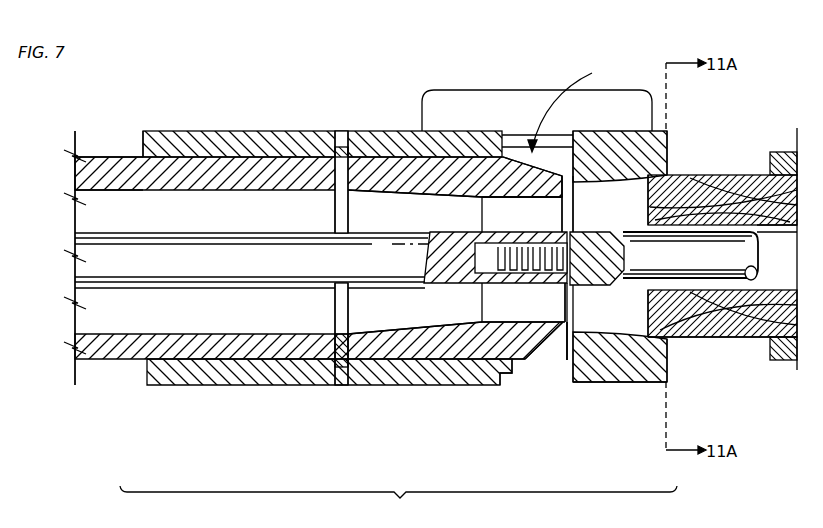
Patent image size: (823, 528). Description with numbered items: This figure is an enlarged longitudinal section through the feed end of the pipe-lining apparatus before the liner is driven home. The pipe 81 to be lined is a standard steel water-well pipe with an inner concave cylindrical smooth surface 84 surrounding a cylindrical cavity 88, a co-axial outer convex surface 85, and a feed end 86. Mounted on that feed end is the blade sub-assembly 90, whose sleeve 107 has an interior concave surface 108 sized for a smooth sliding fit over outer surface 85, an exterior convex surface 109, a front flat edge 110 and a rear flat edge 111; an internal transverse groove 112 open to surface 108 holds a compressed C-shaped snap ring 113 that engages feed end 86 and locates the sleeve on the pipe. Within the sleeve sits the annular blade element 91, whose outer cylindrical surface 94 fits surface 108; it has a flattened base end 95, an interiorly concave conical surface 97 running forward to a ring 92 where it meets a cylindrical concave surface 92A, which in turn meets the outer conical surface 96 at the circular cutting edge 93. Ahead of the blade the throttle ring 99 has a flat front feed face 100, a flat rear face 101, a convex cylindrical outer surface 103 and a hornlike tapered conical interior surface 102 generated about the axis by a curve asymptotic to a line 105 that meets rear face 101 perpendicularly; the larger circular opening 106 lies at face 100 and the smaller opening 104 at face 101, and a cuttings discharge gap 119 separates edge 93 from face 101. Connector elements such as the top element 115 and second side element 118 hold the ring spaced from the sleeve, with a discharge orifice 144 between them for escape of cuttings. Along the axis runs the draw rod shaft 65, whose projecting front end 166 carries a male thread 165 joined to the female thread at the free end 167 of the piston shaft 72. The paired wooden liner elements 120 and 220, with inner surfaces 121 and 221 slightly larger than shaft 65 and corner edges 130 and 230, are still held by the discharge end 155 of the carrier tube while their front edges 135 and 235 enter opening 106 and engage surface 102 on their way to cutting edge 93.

The draw rod shaft 65 is at (730, 269).
The piston shaft 72 is at (96, 269).
The pipe 81 is at (88, 376).
The inner concave cylindrical smooth surface 84 is at (172, 192).
The cylindrical outer convex surface 85 is at (80, 173).
The feed end 86 is at (335, 209).
The cylindrical cavity 88 is at (240, 224).
The blade sub-assembly 90 is at (398, 503).
The blade element 91 is at (440, 172).
The ring 92 is at (482, 200).
The cylindrical concave smooth surface 92A is at (548, 197).
The cutting edge 93 is at (563, 320).
The convex smooth cylindrical outer surface 94 is at (520, 362).
The base end 95 is at (345, 167).
The outer conical surface 96 is at (544, 346).
The interiorly concave conical smooth surface 97 is at (420, 326).
The throttle ring 99 is at (670, 130).
The front feed face 100 is at (667, 151).
The rear face 101 is at (574, 381).
The conical interior surface 102 is at (630, 336).
The convex cylindrical outer surface 103 is at (622, 384).
The opening 104 is at (574, 205).
The line 105 is at (567, 366).
The circular opening 106 is at (690, 339).
The sleeve 107 is at (267, 131).
The interior concave surface 108 is at (147, 366).
The exterior convex surface 109 is at (250, 386).
The front flat edge 110 is at (503, 386).
The rear flat edge 111 is at (143, 147).
The internal transverse groove 112 is at (341, 147).
The snap ring 113 is at (351, 152).
The top element 115 is at (505, 99).
The second side element 118 is at (582, 321).
The cuttings discharge gap 119 is at (538, 154).
The liner element 120 is at (760, 346).
The inner concave cylindrical surface 121 is at (757, 276).
The edge 130 is at (730, 339).
The front flat end 135 is at (648, 305).
The discharge orifice 144 is at (578, 107).
The discharge end 155 is at (776, 152).
The male thread 165 is at (542, 256).
The front end 166 is at (623, 247).
The free end 167 is at (428, 260).
The liner element 220 is at (700, 182).
The interior surface 221 is at (794, 233).
The edge 230 is at (690, 177).
The front edge 235 is at (648, 200).